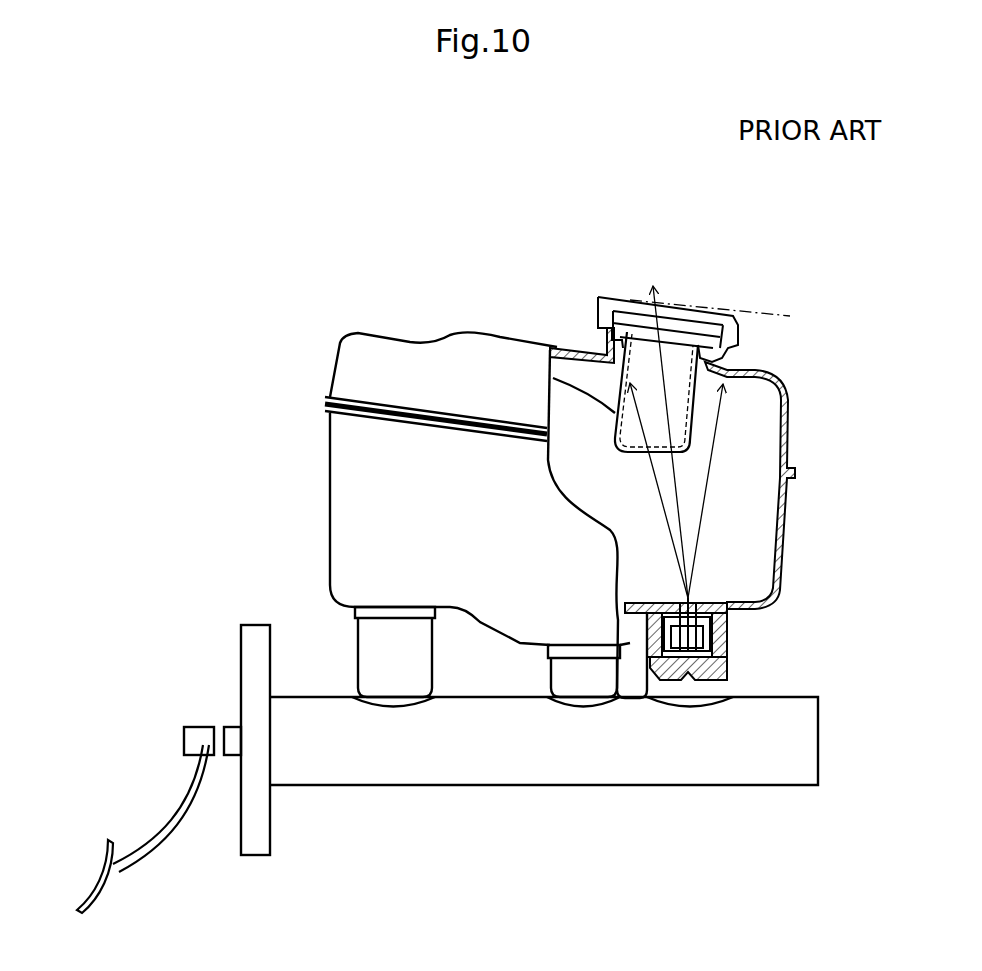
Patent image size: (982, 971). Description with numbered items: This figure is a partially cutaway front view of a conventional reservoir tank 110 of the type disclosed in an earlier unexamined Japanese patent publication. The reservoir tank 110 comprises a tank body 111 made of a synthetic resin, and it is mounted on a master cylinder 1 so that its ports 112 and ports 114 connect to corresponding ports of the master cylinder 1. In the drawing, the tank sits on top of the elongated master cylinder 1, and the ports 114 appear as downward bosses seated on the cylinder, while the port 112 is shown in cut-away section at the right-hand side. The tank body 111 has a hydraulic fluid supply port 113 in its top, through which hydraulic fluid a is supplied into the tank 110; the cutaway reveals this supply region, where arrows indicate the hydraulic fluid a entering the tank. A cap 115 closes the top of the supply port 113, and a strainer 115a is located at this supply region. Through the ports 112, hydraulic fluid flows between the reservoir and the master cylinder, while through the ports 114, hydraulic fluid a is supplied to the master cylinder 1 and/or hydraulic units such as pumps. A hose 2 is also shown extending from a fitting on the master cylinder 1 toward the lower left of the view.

The master cylinder 1 is at (523, 765).
The hose / tube 2 is at (98, 878).
The reservoir tank 110 is at (328, 520).
The tank body 111 is at (366, 340).
The ports 112 is at (700, 640).
The hydraulic fluid supply port 113 is at (623, 328).
The ports 114 is at (400, 605).
The cap 115 is at (723, 453).
The strainer 115a is at (583, 345).
The hydraulic fluid a is at (660, 296).